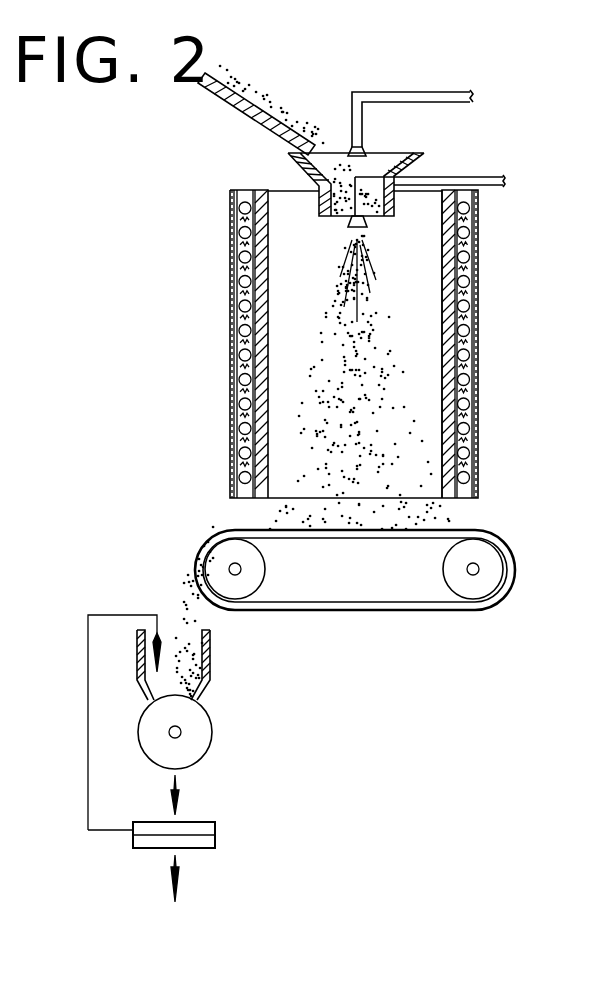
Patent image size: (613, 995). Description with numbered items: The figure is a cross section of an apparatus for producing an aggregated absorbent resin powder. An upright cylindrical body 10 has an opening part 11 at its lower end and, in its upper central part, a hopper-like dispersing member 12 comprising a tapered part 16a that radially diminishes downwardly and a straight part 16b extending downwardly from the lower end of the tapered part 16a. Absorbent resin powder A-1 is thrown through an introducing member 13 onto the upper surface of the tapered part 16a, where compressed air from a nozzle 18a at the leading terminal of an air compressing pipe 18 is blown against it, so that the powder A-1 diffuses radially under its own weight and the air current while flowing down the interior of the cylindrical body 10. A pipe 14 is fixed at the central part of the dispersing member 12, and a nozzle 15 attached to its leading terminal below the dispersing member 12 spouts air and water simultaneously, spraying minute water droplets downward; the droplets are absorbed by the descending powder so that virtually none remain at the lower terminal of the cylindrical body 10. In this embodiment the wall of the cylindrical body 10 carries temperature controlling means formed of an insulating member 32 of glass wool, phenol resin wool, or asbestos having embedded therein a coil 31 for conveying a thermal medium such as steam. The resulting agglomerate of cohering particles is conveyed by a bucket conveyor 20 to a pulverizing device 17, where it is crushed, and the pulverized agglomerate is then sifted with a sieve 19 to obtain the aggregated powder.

The absorbent resin powder A-1 is at (273, 102).
The cylindrical body 10 is at (364, 344).
The opening part 11 is at (425, 477).
The hopper-like dispersing member 12 is at (403, 184).
The introducing member 13 is at (237, 103).
The pipe 14 is at (492, 176).
The nozzle 15 is at (352, 226).
The tapered part 16a is at (422, 162).
The straight part 16b is at (394, 210).
The pulverizing device 17 is at (212, 662).
The air compressing pipe 18 is at (410, 97).
The nozzle 18a is at (366, 150).
The sieve 19 is at (215, 828).
The bucket conveyor 20 is at (370, 612).
The coil 31 is at (232, 445).
The insulating member 32 is at (478, 405).